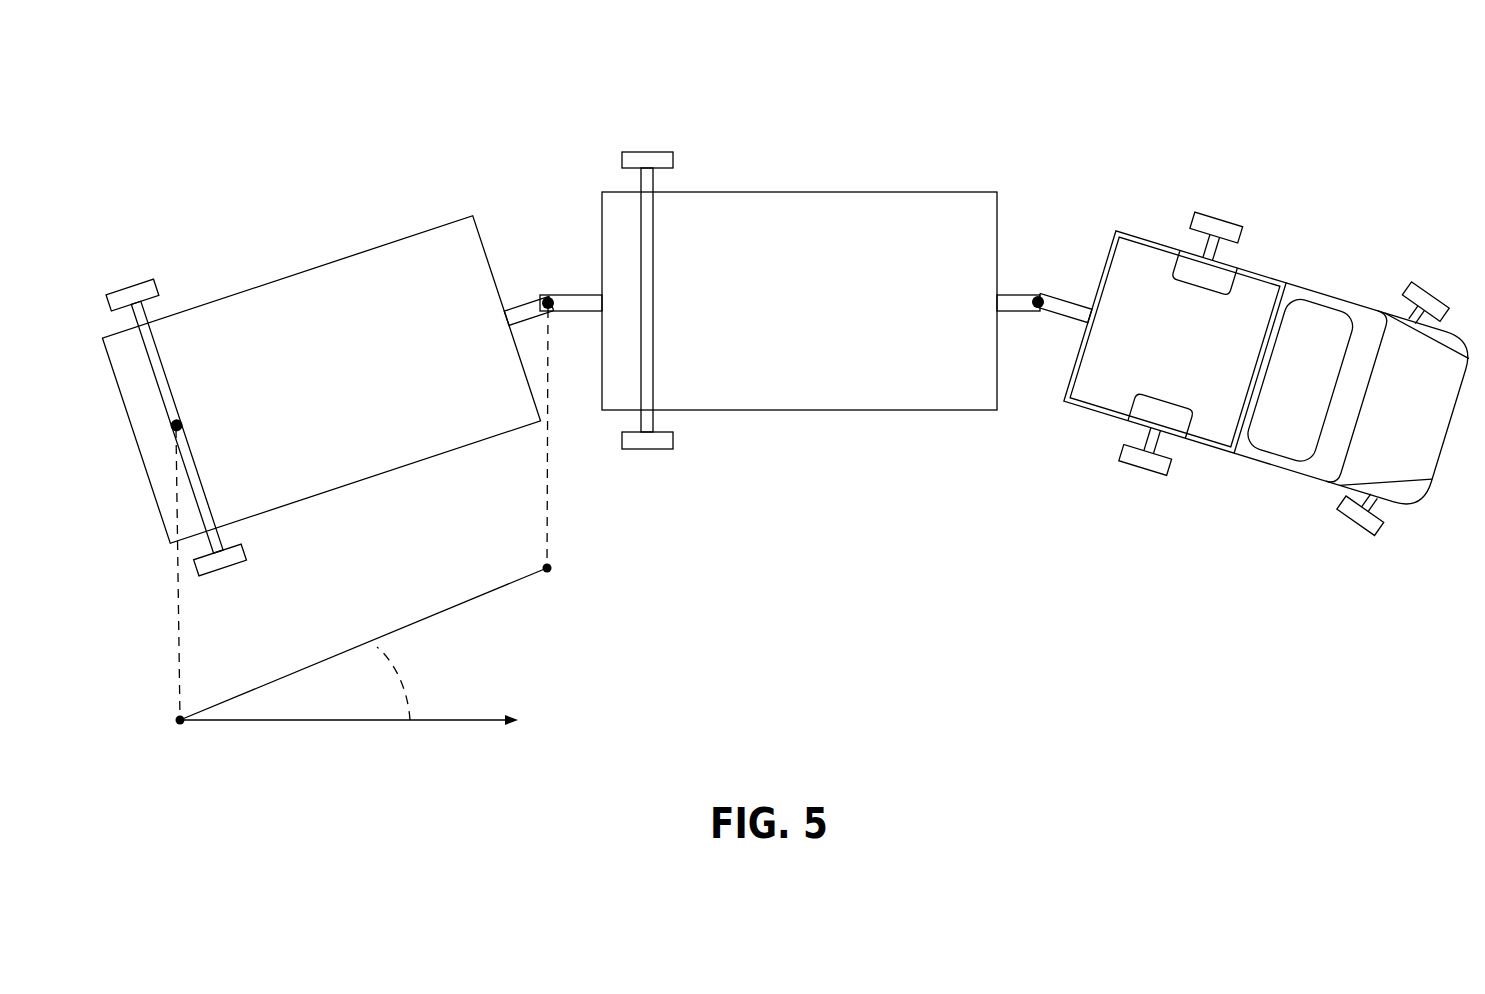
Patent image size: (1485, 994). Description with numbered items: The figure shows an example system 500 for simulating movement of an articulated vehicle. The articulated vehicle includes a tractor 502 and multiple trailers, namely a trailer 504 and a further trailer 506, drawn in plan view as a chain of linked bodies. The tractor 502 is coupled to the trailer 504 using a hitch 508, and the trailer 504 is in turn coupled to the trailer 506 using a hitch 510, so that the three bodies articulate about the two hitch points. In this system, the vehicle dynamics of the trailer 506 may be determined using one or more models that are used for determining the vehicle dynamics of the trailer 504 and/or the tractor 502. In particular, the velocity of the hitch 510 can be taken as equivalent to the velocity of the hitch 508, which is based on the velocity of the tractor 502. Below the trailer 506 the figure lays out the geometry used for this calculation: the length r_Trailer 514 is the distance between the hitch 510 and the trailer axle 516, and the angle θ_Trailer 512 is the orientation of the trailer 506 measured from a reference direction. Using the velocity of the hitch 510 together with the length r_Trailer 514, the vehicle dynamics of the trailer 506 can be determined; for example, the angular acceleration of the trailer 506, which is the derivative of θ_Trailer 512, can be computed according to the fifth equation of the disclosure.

The system 500 is at (185, 67).
The tractor 502 is at (1330, 290).
The trailer 504 is at (913, 191).
The trailer 506 is at (425, 231).
The hitch 508 is at (1040, 298).
The hitch 510 is at (549, 298).
The trailer angle 512 is at (420, 680).
The trailer length 514 is at (350, 647).
The trailer axle 516 is at (183, 423).